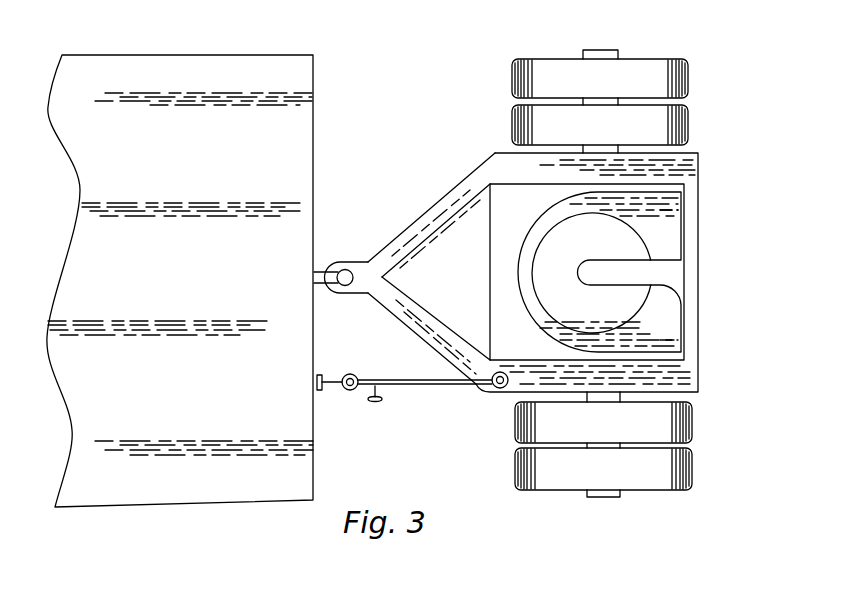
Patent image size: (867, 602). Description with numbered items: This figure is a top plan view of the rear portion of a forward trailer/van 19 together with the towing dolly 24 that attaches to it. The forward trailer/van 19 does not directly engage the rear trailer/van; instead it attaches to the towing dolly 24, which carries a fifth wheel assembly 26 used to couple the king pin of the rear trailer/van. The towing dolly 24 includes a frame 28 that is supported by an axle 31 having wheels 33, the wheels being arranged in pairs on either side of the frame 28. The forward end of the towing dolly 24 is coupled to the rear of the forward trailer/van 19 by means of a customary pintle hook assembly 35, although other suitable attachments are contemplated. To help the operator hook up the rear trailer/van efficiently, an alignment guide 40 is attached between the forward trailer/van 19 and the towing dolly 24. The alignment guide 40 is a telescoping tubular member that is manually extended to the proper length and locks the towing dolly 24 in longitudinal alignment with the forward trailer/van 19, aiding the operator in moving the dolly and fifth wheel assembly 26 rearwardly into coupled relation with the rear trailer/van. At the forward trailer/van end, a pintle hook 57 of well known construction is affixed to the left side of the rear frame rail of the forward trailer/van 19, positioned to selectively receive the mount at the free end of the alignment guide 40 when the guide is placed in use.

The forward trailer/van 19 is at (208, 306).
The towing dolly 24 is at (440, 168).
The fifth wheel assembly 26 is at (604, 247).
The frame 28 is at (412, 232).
The axle 31 is at (603, 50).
The wheels 33 is at (690, 74).
The pintle hook assembly 35 is at (337, 279).
The alignment guide 40 is at (417, 391).
The pintle hook 57 is at (330, 386).